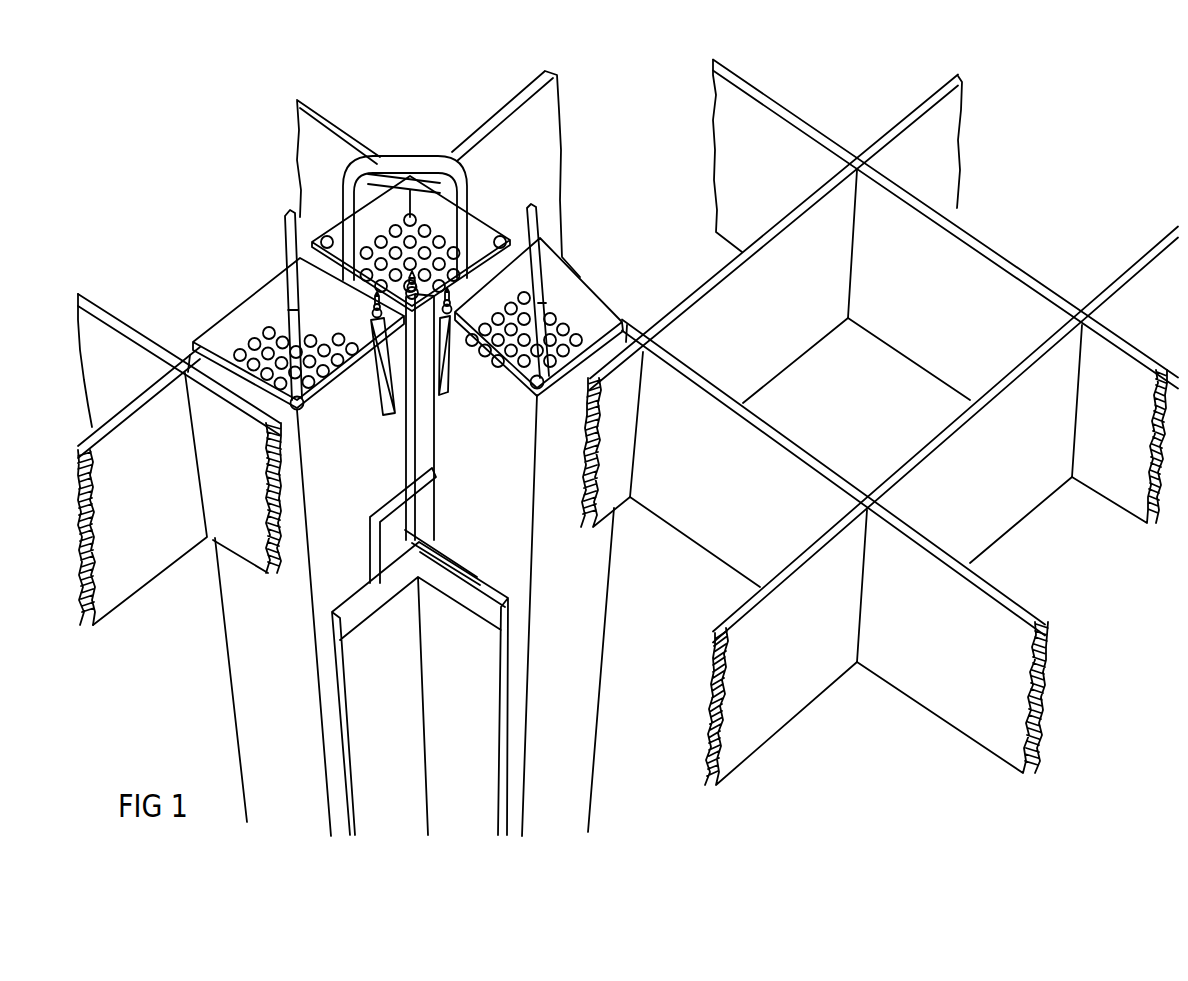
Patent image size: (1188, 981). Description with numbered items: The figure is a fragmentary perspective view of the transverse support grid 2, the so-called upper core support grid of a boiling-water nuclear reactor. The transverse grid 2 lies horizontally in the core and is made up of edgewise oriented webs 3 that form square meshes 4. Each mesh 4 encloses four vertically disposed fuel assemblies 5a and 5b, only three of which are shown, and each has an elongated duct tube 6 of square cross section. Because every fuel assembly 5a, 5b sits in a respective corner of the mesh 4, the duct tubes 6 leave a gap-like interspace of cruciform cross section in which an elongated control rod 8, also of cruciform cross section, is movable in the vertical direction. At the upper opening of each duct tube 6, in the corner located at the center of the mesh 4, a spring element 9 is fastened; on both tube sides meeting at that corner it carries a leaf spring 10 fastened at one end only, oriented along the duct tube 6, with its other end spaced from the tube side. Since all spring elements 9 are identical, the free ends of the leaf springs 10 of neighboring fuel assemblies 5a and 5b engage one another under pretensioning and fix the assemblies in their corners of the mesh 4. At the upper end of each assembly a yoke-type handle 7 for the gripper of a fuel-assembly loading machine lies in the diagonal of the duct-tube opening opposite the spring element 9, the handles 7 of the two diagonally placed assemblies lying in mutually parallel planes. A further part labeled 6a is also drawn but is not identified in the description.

The transverse support grid 2 is at (917, 110).
The web 3 is at (713, 280).
The mesh 4 is at (887, 367).
The fuel assembly 5a is at (253, 303).
The fuel assembly 5b is at (423, 200).
The duct tube 6 is at (575, 305).
The central support bar 6a is at (404, 444).
The yoke-type handle 7 is at (415, 158).
The control rod 8 is at (365, 683).
The spring element 9 is at (368, 293).
The leaf spring 10 is at (383, 373).